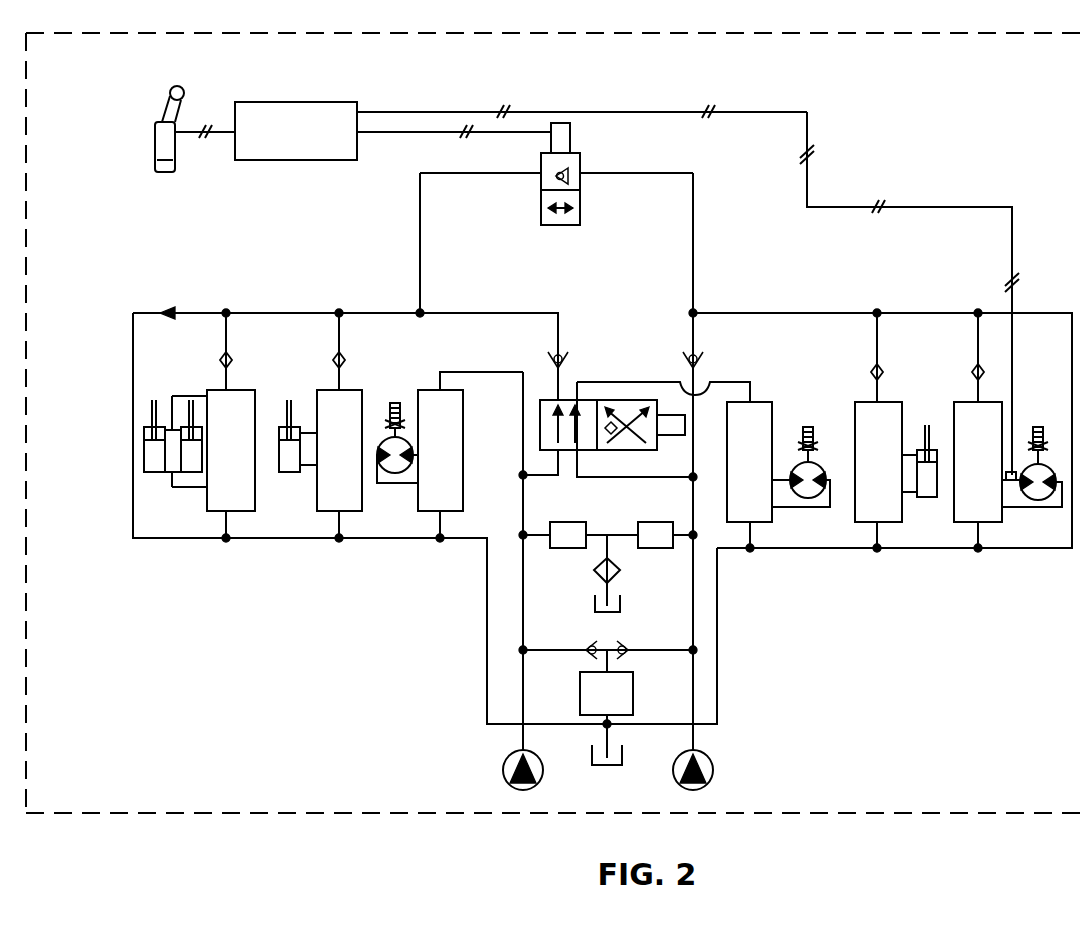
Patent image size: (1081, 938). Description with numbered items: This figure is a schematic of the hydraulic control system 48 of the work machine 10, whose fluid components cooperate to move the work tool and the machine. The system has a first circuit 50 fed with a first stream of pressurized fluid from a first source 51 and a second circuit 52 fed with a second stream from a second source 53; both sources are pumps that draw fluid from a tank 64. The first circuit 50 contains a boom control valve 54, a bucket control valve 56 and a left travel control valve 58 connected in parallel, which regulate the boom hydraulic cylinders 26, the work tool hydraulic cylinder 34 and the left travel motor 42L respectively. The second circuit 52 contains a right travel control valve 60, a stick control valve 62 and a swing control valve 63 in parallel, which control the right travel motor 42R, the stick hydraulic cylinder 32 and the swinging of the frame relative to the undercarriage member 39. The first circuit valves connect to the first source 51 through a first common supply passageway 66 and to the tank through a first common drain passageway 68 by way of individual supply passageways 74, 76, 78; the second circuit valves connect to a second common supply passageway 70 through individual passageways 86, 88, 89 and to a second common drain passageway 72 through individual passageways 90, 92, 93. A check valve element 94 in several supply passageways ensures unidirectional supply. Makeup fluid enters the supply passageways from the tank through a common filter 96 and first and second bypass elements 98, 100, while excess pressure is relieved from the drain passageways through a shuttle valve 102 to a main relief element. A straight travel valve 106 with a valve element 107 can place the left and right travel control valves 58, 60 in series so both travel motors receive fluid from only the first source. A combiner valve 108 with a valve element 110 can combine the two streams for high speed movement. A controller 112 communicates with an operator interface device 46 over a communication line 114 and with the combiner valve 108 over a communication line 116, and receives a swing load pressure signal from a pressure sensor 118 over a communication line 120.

The work machine 10 is at (1003, 40).
The hydraulic cylinders 26 is at (156, 473).
The hydraulic cylinder 32 is at (932, 497).
The hydraulic cylinder 34 is at (290, 473).
The undercarriage member 39 is at (1038, 427).
The left travel motor 42L is at (398, 403).
The right travel motor 42R is at (804, 427).
The operator interface device 46 is at (172, 90).
The hydraulic control system 48 is at (962, 184).
The first circuit 50 is at (252, 293).
The first source 51 is at (541, 780).
The second circuit 52 is at (892, 296).
The second source 53 is at (711, 780).
The boom control valve 54 is at (625, 605).
The bucket control valve 56 is at (339, 450).
The left travel control valve 58 is at (440, 450).
The right travel control valve 60 is at (749, 462).
The stick control valve 62 is at (878, 462).
The swing control valve 63 is at (978, 462).
The tank 64 is at (614, 765).
The first common supply passageway 66 is at (523, 490).
The first common drain passageway 68 is at (487, 643).
The second common supply passageway 70 is at (697, 482).
The second common drain passageway 72 is at (717, 594).
The fluid passageway 74 is at (228, 378).
The fluid passageway 76 is at (342, 368).
The fluid passageway 78 is at (490, 372).
The fluid passageway 86 is at (723, 382).
The fluid passageway 88 is at (880, 392).
The fluid passageway 89 is at (975, 395).
The fluid passageway 90 is at (752, 534).
The fluid passageway 92 is at (880, 534).
The fluid passageway 93 is at (982, 535).
The check valve element 94 is at (220, 358).
The common filter 96 is at (622, 570).
The first bypass element 98 is at (572, 522).
The second bypass element 100 is at (650, 524).
The shuttle valve 102 is at (610, 640).
The straight travel valve 106 is at (590, 372).
The valve element 107 is at (657, 450).
The combiner valve 108 is at (578, 142).
The valve element 110 is at (541, 160).
The controller 112 is at (296, 131).
The communication line 114 is at (222, 130).
The communication line 116 is at (418, 112).
The pressure sensor 118 is at (1008, 504).
The communication line 120 is at (810, 115).